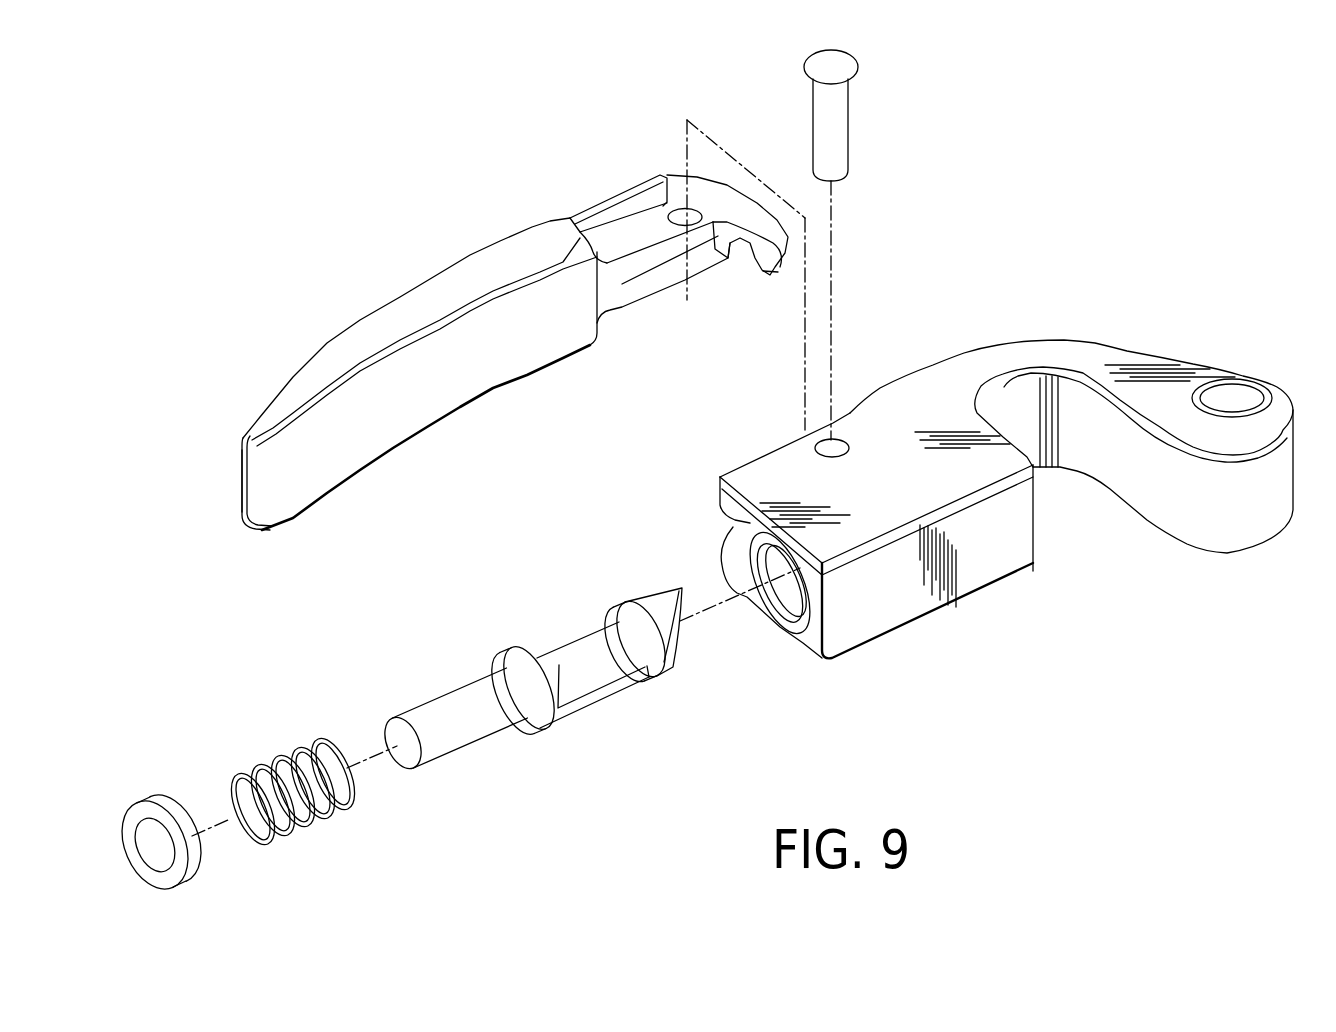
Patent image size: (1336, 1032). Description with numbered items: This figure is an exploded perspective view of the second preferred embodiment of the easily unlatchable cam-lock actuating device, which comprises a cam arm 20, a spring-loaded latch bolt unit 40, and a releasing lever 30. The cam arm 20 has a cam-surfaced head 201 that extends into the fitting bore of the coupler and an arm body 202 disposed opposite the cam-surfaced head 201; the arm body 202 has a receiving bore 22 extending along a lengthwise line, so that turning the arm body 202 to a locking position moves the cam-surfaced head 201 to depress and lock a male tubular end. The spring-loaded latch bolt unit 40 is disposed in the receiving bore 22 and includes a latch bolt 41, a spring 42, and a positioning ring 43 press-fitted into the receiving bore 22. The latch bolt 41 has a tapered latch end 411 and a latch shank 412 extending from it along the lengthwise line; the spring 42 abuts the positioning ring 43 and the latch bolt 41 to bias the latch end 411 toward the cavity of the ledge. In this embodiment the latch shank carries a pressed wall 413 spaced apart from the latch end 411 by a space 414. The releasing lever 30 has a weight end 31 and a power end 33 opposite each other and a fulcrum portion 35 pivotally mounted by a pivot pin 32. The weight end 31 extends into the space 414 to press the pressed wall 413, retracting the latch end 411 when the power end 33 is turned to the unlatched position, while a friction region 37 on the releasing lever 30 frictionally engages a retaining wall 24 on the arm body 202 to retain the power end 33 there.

The cam arm 20 is at (913, 632).
The receiving bore 22 is at (767, 620).
The retaining wall 24 is at (833, 432).
The cam-surfaced head 201 is at (1177, 377).
The arm body 202 is at (977, 582).
The releasing lever 30 is at (385, 302).
The weight end 31 is at (750, 255).
The pivot pin 32 is at (835, 131).
The power end 33 is at (253, 478).
The fulcrum portion 35 is at (683, 210).
The friction region 37 is at (600, 205).
The spring-loaded latch bolt unit 40 is at (428, 770).
The latch bolt 41 is at (485, 735).
The spring 42 is at (317, 820).
The positioning ring 43 is at (165, 812).
The latch end 411 is at (657, 603).
The latch shank 412 is at (573, 707).
The pressed wall 413 is at (547, 655).
The space 414 is at (570, 660).